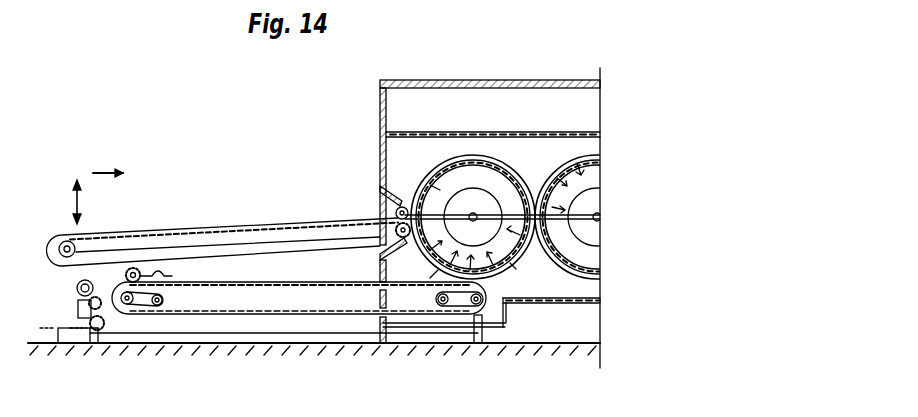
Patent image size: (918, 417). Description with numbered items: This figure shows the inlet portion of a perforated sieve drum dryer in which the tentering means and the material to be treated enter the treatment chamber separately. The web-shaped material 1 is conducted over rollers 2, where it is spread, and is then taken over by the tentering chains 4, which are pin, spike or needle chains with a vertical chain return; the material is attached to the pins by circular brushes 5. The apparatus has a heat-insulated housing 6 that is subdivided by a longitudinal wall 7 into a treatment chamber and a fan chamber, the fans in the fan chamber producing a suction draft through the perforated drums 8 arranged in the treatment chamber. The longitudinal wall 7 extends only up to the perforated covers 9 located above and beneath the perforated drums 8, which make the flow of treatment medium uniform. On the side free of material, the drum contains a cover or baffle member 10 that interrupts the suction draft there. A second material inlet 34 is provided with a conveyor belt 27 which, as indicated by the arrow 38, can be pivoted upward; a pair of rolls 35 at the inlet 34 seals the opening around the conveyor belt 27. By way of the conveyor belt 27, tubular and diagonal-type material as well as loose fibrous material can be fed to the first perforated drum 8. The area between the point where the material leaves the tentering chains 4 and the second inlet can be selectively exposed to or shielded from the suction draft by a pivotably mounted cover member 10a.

The web-shaped material 1 is at (60, 343).
The rollers 2 is at (93, 317).
The tentering chains 4 is at (259, 315).
The circular brushes 5 is at (137, 268).
The heat-insulated housing 6 is at (467, 80).
The longitudinal wall 7 is at (415, 163).
The perforated drums 8 is at (523, 180).
The perforated covers 9 is at (573, 132).
The cover or baffle member 10 is at (464, 166).
The pivotably mounted cover member 10a is at (441, 257).
The conveyor belt 27 is at (282, 243).
The second material inlet 34 is at (380, 247).
The pair of rolls 35 is at (396, 211).
The arrow 38 is at (75, 202).